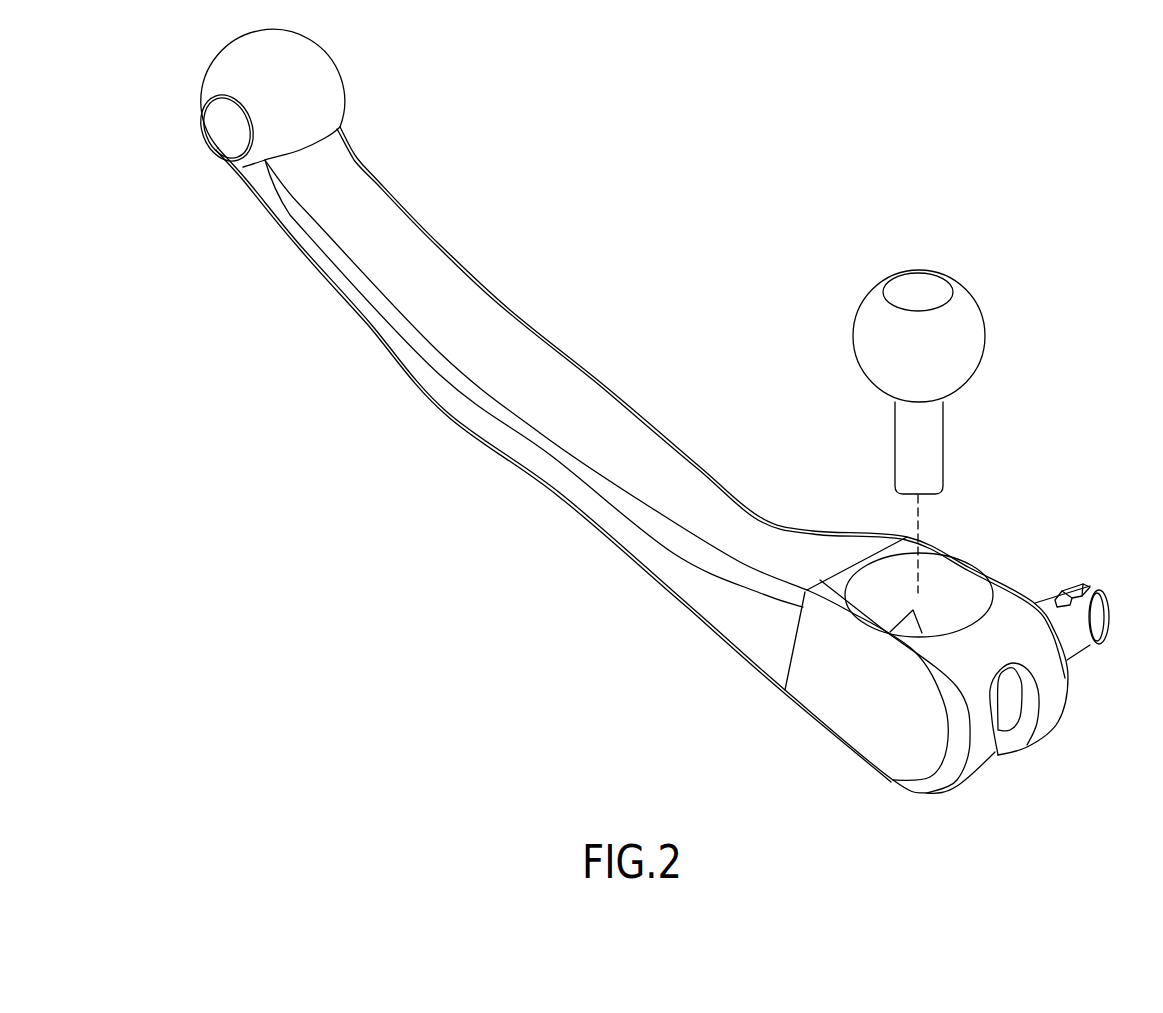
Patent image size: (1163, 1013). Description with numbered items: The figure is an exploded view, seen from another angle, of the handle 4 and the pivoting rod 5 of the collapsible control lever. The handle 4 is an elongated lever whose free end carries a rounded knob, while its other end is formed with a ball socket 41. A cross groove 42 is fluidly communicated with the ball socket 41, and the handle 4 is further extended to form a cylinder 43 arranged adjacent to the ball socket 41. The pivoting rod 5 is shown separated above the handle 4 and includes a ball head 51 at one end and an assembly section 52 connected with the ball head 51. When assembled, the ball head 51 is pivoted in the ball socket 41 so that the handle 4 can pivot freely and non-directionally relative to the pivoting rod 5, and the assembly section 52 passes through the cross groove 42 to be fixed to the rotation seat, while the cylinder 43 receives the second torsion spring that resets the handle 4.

The handle 4 is at (590, 331).
The ball socket 41 is at (957, 593).
The cross groove 42 is at (1007, 743).
The cylinder 43 is at (1078, 640).
The pivoting rod 5 is at (929, 403).
The ball head 51 is at (858, 345).
The assembly section 52 is at (895, 445).